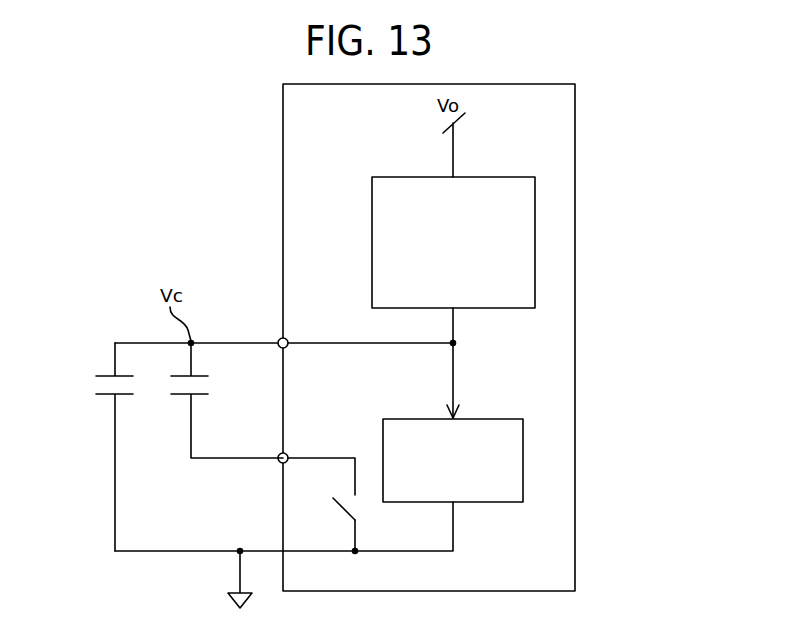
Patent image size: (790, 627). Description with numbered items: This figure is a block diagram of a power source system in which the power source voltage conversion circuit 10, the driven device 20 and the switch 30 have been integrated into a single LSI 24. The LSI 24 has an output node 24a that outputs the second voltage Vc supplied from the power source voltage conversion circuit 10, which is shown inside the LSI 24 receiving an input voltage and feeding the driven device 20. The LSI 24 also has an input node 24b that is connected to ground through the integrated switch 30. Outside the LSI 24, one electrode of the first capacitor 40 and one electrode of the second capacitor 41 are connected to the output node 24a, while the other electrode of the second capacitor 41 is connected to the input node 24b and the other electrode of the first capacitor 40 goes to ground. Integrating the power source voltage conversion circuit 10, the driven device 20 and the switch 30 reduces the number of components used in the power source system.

The power source voltage conversion circuit 10 is at (503, 177).
The driven device 20 is at (485, 418).
The LSI 24 is at (576, 312).
The output node 24a is at (278, 338).
The input node 24b is at (278, 452).
The switch 30 is at (343, 514).
The first capacitor 40 is at (185, 395).
The second capacitor 41 is at (110, 395).